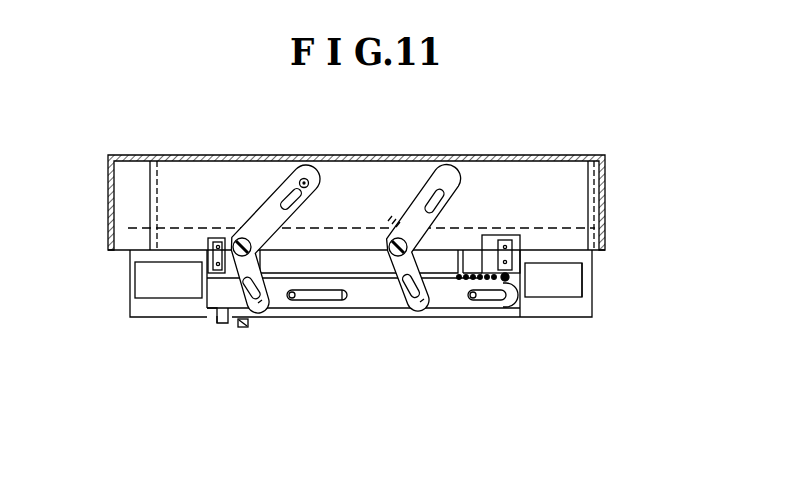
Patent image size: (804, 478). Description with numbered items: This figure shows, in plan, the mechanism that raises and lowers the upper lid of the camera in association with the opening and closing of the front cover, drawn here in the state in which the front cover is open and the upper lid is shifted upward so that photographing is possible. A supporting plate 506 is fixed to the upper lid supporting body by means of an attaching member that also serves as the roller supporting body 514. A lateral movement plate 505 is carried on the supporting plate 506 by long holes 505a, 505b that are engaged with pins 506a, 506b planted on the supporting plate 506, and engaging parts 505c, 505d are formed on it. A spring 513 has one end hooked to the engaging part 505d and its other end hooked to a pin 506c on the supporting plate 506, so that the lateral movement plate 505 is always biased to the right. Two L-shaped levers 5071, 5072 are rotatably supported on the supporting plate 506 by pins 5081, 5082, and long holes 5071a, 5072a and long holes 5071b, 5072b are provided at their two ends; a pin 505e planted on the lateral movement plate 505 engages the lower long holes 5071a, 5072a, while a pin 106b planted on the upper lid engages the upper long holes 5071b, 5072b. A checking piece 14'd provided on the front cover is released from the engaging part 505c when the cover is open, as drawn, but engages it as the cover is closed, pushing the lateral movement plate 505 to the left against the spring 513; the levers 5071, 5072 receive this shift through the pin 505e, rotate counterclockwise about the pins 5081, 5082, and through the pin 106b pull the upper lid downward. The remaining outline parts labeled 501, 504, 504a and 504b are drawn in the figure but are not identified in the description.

The housing 501 is at (108, 193).
The base plate 504 is at (138, 308).
The left end portion of base plate 504a is at (147, 279).
The right end portion of base plate 504b is at (584, 280).
The lateral movement plate 505 is at (376, 304).
The long hole 505a is at (494, 304).
The long hole 505b is at (334, 299).
The engaging part 505c is at (222, 326).
The engaging part 505d is at (458, 272).
The pin 505e is at (259, 302).
The supporting plate 506 is at (228, 275).
The pin 506a is at (473, 300).
The pin 506b is at (296, 301).
The pin 506c is at (553, 280).
The L-shaped lever 5071 is at (273, 211).
The long hole 5071a is at (246, 294).
The long hole 5071b is at (293, 182).
The L-shaped lever 5072 is at (415, 218).
The long hole 5072a is at (407, 301).
The long hole 5072b is at (434, 184).
The pin 5081 is at (241, 238).
The pin 5082 is at (389, 240).
The spring 513 is at (499, 282).
The roller supporting body 514 is at (216, 245).
The pin 106b is at (307, 180).
The checking piece 14'd is at (266, 358).